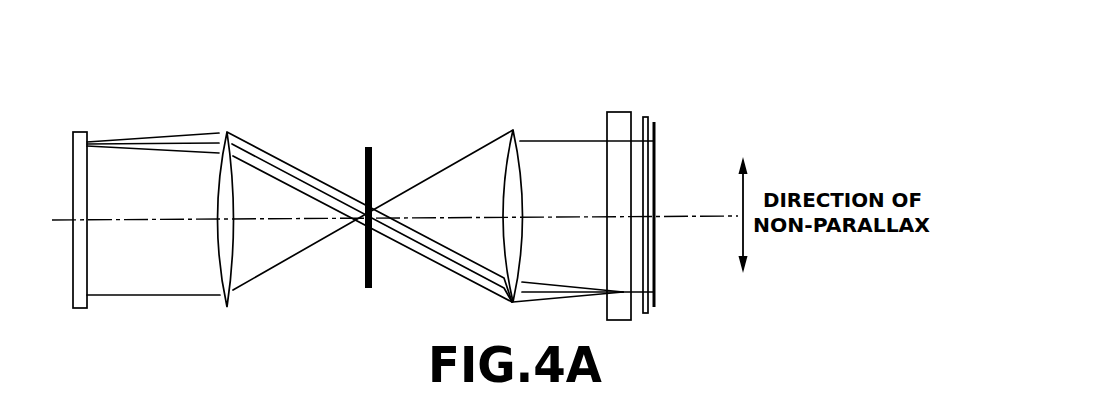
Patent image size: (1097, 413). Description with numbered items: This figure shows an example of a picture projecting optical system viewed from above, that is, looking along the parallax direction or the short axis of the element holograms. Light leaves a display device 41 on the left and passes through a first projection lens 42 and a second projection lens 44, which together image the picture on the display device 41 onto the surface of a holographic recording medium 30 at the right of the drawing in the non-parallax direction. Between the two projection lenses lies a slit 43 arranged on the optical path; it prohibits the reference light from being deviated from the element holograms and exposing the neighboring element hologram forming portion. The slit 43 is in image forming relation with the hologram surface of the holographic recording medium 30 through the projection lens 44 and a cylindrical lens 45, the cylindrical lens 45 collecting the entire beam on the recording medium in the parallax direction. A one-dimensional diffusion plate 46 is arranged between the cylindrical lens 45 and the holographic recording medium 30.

The display device 41 is at (82, 133).
The projection lens 42 is at (228, 132).
The slit 43 is at (368, 147).
The projection lens 44 is at (516, 130).
The cylindrical lens 45 is at (620, 117).
The one-dimensional diffusion plate 46 is at (647, 112).
The holographic recording medium 30 is at (657, 160).